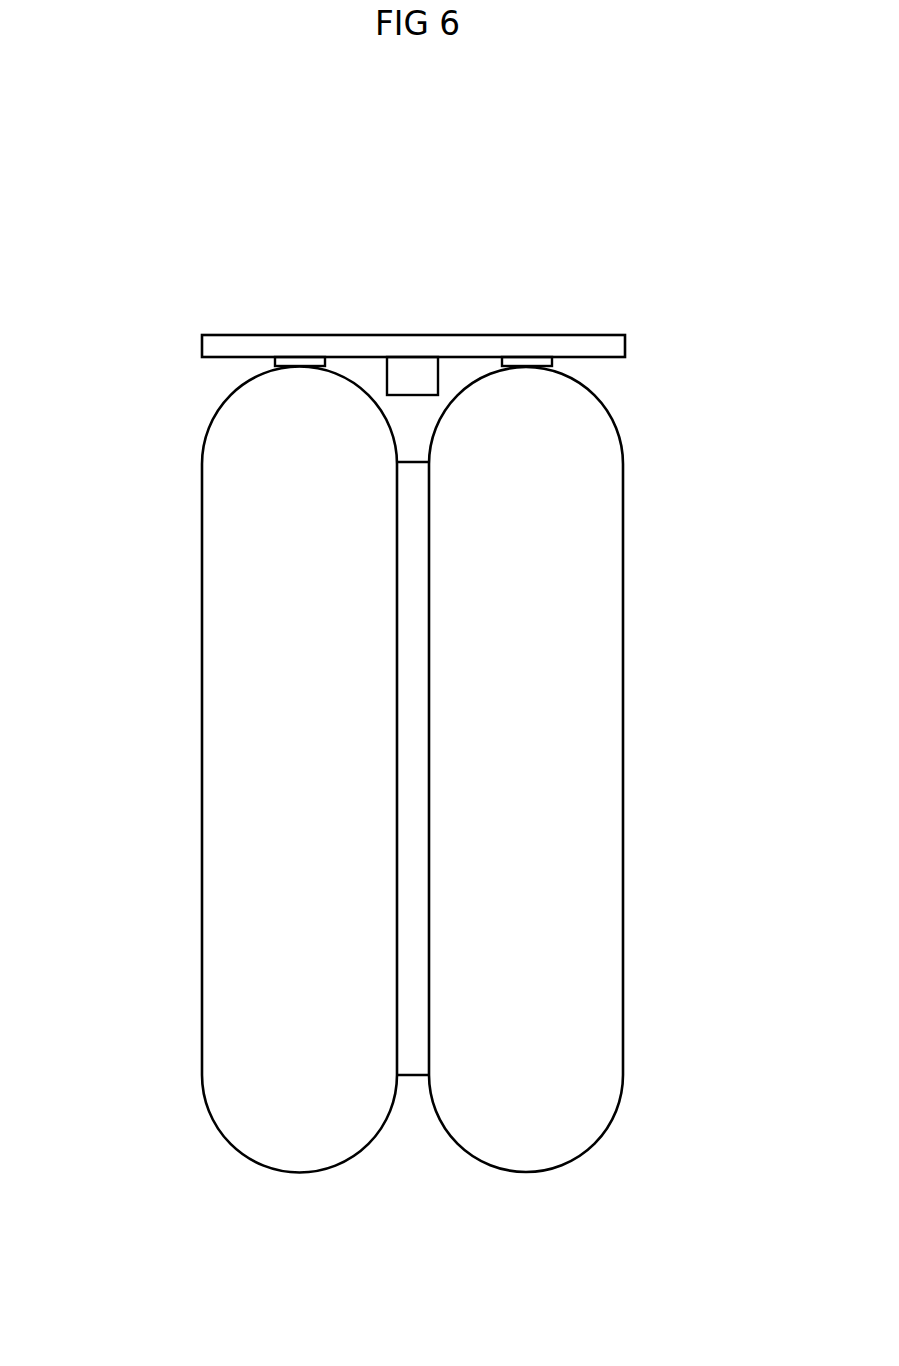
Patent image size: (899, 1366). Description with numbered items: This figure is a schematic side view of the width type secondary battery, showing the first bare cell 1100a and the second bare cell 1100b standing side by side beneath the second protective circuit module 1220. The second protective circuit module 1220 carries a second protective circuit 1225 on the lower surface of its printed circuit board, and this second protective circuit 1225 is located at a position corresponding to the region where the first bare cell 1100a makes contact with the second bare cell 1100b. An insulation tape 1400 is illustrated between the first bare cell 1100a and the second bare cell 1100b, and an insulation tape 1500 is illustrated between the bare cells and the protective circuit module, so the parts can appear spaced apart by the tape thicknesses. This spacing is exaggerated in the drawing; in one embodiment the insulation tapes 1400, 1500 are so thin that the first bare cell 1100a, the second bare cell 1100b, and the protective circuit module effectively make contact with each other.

The first bare cell 1100a is at (567, 1127).
The second bare cell 1100b is at (260, 1130).
The second protective circuit module 1220 is at (290, 345).
The second protective circuit 1225 is at (412, 373).
The insulation tape 1400 is at (413, 1063).
The insulation tape 1500 is at (523, 360).